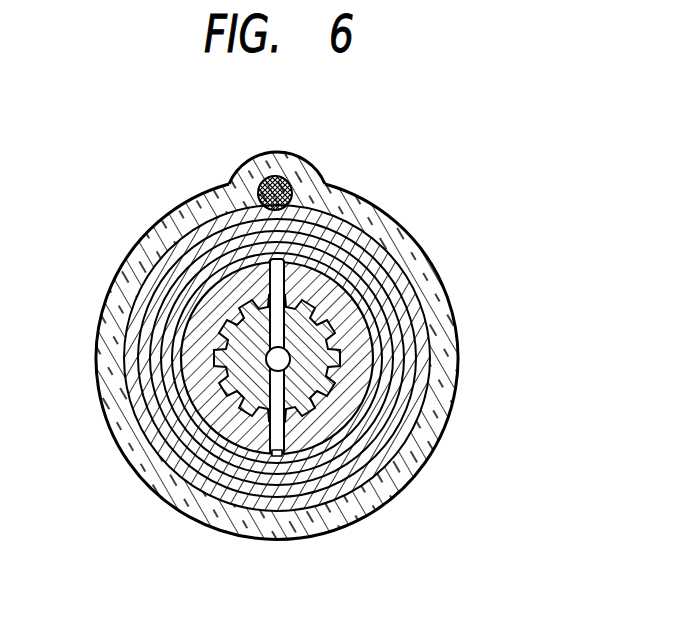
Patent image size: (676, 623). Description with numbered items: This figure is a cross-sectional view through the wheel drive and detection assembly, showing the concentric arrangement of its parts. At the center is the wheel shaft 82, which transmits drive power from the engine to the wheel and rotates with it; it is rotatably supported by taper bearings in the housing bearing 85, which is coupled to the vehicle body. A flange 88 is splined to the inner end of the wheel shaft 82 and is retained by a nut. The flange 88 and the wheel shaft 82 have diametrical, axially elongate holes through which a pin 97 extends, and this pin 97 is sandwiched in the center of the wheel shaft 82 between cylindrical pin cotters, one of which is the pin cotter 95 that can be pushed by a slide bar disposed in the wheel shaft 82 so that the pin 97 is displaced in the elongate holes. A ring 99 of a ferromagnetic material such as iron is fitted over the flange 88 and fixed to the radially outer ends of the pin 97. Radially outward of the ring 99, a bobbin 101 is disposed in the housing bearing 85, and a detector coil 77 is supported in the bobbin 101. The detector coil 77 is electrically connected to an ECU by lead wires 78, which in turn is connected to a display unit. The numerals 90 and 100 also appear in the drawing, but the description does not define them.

The detector coil 77 is at (333, 217).
The lead wires 78 is at (268, 178).
The wheel shaft 82 is at (233, 340).
The housing bearing 85 is at (300, 156).
The flange 88 is at (234, 450).
The spacer 90 is at (225, 432).
The pin cotter 95 is at (292, 352).
The pin 97 is at (205, 248).
The ring 99 is at (382, 447).
The retaining ring 100 is at (398, 367).
The bobbin 101 is at (401, 262).